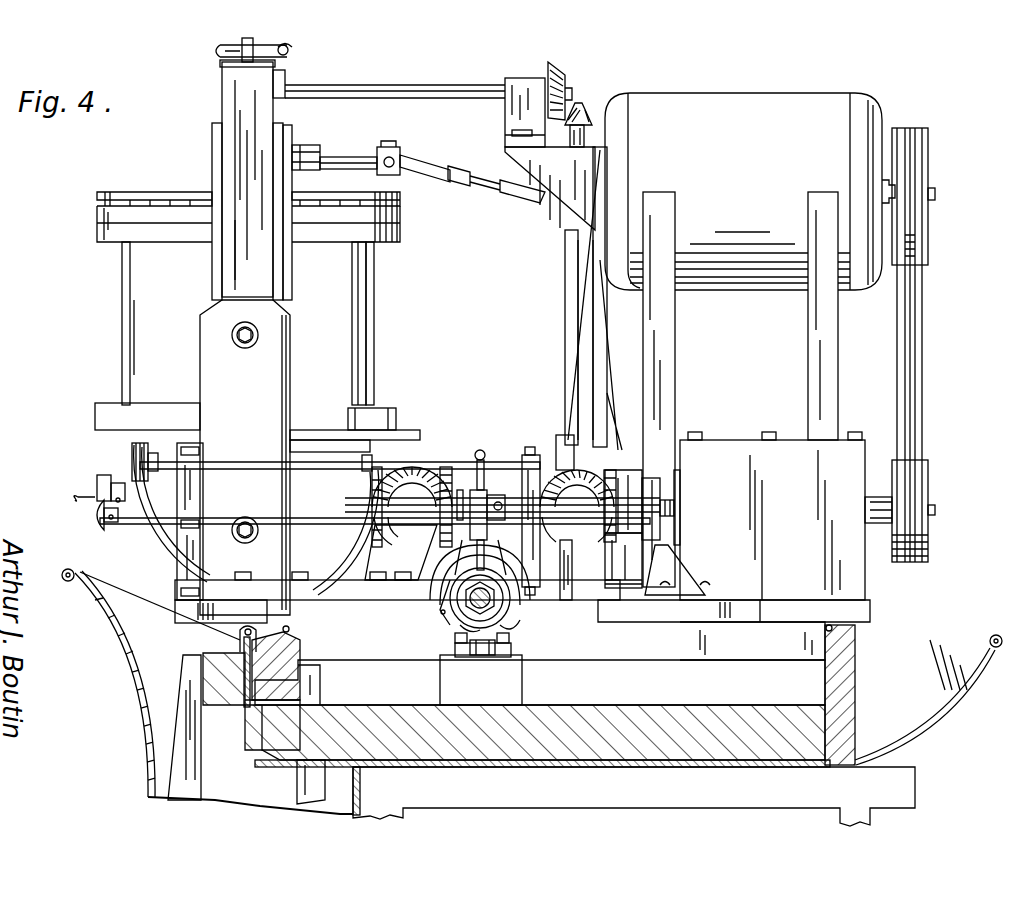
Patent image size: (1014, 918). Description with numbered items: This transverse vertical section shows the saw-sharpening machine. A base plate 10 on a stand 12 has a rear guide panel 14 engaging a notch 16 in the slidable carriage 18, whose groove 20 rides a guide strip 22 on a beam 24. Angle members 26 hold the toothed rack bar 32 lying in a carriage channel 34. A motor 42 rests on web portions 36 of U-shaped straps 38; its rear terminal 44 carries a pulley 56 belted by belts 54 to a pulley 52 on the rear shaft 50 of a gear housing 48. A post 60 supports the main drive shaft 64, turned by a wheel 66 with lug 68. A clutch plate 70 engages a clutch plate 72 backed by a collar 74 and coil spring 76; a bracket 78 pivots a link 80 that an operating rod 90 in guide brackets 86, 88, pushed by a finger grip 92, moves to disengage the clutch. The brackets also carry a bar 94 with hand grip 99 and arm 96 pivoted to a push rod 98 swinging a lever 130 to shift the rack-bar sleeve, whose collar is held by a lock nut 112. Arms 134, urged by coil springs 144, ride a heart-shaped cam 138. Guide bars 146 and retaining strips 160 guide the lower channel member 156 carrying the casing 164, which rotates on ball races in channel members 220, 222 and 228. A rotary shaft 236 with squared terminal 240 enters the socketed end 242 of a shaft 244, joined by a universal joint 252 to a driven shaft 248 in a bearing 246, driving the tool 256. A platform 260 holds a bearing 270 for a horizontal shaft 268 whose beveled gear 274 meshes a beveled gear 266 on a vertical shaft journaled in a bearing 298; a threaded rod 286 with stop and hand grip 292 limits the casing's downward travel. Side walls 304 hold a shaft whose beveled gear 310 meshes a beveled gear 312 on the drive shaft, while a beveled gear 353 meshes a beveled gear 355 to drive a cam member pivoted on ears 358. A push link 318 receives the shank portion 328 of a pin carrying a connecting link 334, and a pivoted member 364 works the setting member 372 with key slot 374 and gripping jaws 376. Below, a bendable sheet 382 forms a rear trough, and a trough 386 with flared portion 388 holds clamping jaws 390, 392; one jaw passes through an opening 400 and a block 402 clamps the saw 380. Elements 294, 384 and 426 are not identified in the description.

The base plate 10 is at (628, 752).
The bottom plate 12 is at (912, 790).
The pan wall 14 is at (845, 650).
The pan bottom 16 is at (824, 642).
The top plate 18 is at (623, 655).
The pivot pin 20 is at (290, 628).
The clamp block 22 is at (295, 650).
The lower block 24 is at (272, 698).
The pedestal 26 is at (484, 696).
The housing 32 is at (475, 630).
The housing arm 34 is at (468, 630).
The base rail 36 is at (385, 595).
The motor support pillar 38 is at (668, 350).
The motor 42 is at (752, 100).
The motor shaft 44 is at (935, 200).
The gear box 48 is at (858, 590).
The pulley hub 50 is at (936, 510).
The lower pulley 52 is at (929, 556).
The belt 54 is at (920, 332).
The upper pulley 56 is at (928, 258).
The slide block 60 is at (285, 372).
The guide rod 64 is at (312, 500).
The stop block 66 is at (98, 485).
The hook 68 is at (82, 502).
The bearing block 70 is at (640, 490).
The bearing support 72 is at (623, 560).
The flange 74 is at (660, 490).
The nut 76 is at (675, 511).
The brace 78 is at (682, 572).
The plate 80 is at (678, 525).
The post 86 is at (548, 590).
The arcuate plate 88 is at (176, 562).
The arcuate plate edge 90 is at (326, 520).
The cam 92 is at (95, 520).
The bevel gear 94 is at (412, 464).
The bearing plate 96 is at (526, 450).
The pin 98 is at (505, 462).
The knurled knob 99 is at (132, 458).
The spindle pin 112 is at (490, 612).
The sliding block 130 is at (476, 455).
The housing lug 134 is at (445, 618).
The drive shaft 138 is at (438, 502).
The connecting post 144 is at (458, 580).
The column face 146 is at (230, 262).
The cross bar 156 is at (100, 412).
The column 160 is at (218, 160).
The upright post 164 is at (355, 312).
The upper bar 220 is at (100, 197).
The lower bar 222 is at (98, 210).
The bar end 228 is at (100, 228).
The clevis 236 is at (530, 200).
The link rod 240 is at (482, 188).
The sleeve 242 is at (455, 180).
The link 244 is at (422, 165).
The knurled nut 246 is at (306, 145).
The rod 248 is at (348, 155).
The knuckle 252 is at (388, 147).
The arcuate edge 256 is at (152, 540).
The bracket 260 is at (598, 165).
The pinion gear 266 is at (585, 108).
The feed rod 268 is at (392, 85).
The bearing block 270 is at (531, 80).
The bevel gear 274 is at (562, 78).
The handle 286 is at (240, 45).
The eye 292 is at (291, 46).
The cap plate 294 is at (222, 66).
The bracket 298 is at (560, 445).
The strut 304 is at (580, 398).
The bevel gear 310 is at (552, 482).
The strut 312 is at (612, 445).
The plate 318 is at (372, 465).
The block 328 is at (374, 438).
The plate 334 is at (310, 442).
The collar 353 is at (376, 470).
The support 355 is at (438, 530).
The diagonal strut 358 is at (598, 323).
The vertical strut 364 is at (590, 305).
The end plate 372 is at (255, 628).
The pan side wall 374 is at (245, 650).
The pivot bracket 376 is at (240, 636).
The pin 380 is at (244, 718).
The gasket 382 is at (706, 766).
The pan lip 384 is at (958, 704).
The pan bottom 386 is at (148, 770).
The pan wall 388 is at (112, 608).
The foot 390 is at (300, 788).
The side wall 392 is at (185, 735).
The plate section 400 is at (355, 662).
The block 402 is at (226, 680).
The mounting block 426 is at (510, 648).